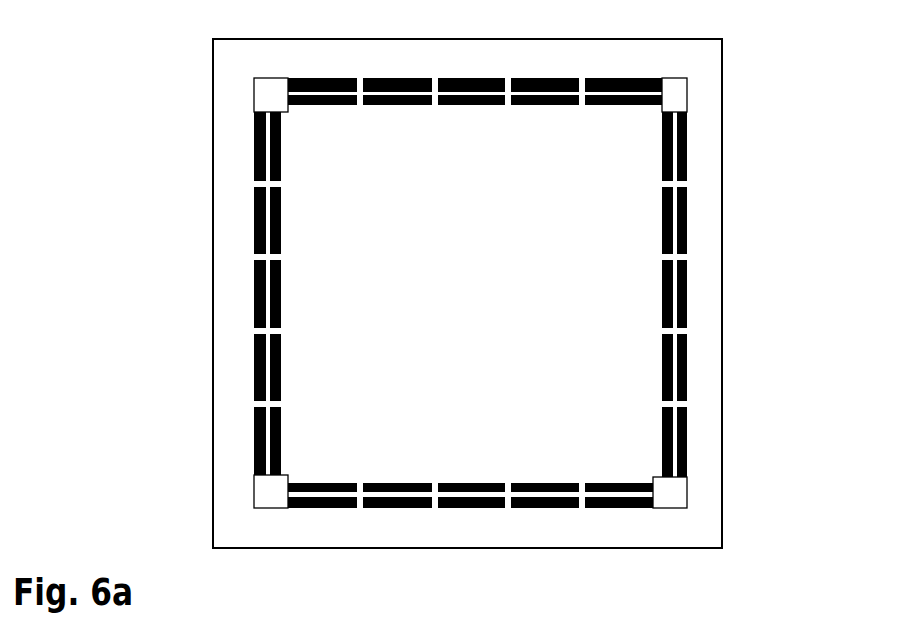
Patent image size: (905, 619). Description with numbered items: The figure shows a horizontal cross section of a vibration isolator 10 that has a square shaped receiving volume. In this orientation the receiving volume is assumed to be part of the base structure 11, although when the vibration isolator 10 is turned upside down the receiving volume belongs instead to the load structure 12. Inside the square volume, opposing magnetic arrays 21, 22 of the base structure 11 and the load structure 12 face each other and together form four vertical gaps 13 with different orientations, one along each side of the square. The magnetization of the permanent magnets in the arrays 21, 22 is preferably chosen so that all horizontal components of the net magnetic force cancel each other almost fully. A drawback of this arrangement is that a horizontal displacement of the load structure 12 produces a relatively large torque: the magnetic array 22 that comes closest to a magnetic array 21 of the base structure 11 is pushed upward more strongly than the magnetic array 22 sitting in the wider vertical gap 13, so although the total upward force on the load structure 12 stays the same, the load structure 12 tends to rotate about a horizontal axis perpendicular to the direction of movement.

The vibration isolator 10 is at (212, 29).
The base structure 11 is at (722, 295).
The load structure 12 is at (529, 256).
The vertical gap 13 is at (658, 496).
The magnetic array 21 is at (687, 158).
The magnetic array 22 is at (662, 290).